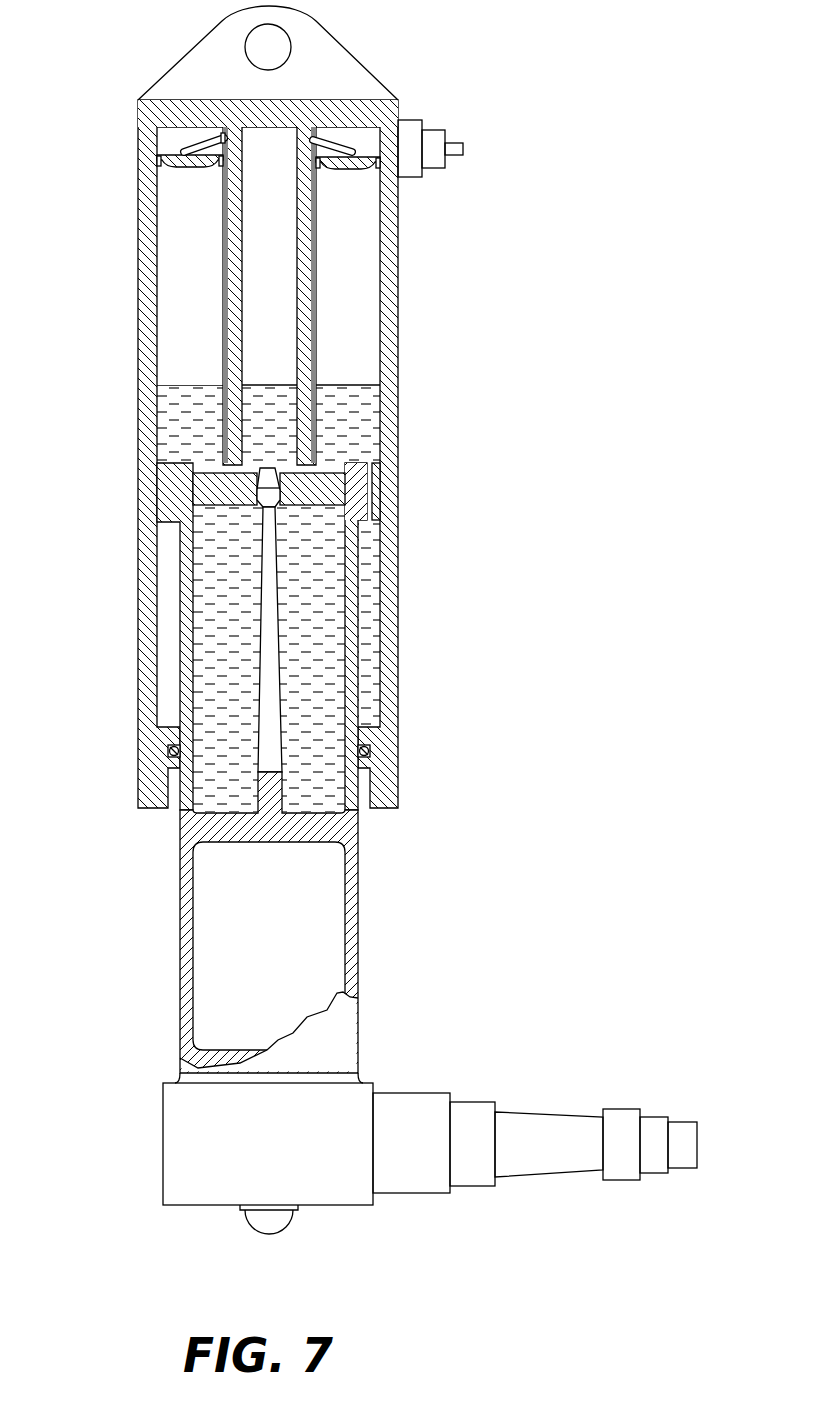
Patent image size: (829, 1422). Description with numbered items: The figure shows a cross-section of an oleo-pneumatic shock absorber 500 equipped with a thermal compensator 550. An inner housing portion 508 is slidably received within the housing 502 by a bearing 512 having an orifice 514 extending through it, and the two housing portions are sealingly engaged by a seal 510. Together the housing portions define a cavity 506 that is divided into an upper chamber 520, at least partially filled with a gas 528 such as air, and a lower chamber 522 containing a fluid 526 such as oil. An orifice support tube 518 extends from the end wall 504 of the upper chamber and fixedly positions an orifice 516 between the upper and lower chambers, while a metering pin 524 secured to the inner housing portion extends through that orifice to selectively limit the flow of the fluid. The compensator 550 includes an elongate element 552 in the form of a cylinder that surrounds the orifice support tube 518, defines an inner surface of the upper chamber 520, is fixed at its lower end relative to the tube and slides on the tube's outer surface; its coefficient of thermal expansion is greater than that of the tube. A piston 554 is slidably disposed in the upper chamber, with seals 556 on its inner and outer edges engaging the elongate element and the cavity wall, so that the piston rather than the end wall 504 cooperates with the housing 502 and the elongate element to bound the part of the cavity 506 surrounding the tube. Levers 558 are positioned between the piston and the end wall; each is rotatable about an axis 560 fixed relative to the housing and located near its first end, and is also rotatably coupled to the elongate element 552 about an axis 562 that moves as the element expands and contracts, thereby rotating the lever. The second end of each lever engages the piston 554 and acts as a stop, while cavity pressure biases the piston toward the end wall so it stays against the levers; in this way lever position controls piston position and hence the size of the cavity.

The oleo-pneumatic shock absorber 500 is at (465, 45).
The housing 502 is at (398, 673).
The end wall 504 is at (328, 130).
The cavity 506 is at (192, 290).
The inner housing portion 508 is at (358, 903).
The seal 510 is at (370, 749).
The bearing 512 is at (350, 465).
The orifice 514 is at (372, 488).
The orifice 516 is at (285, 478).
The orifice support tube 518 is at (299, 352).
The upper chamber 520 is at (193, 357).
The lower chamber 522 is at (215, 668).
The metering pin 524 is at (282, 628).
The fluid 526 is at (219, 606).
The gas 528 is at (192, 240).
The thermal compensator 550 is at (343, 213).
The elongate element 552 is at (316, 288).
The piston 554 is at (348, 166).
The seals 556 is at (222, 166).
The levers 558 is at (198, 147).
The axis 560 is at (225, 137).
The axis 562 is at (347, 148).